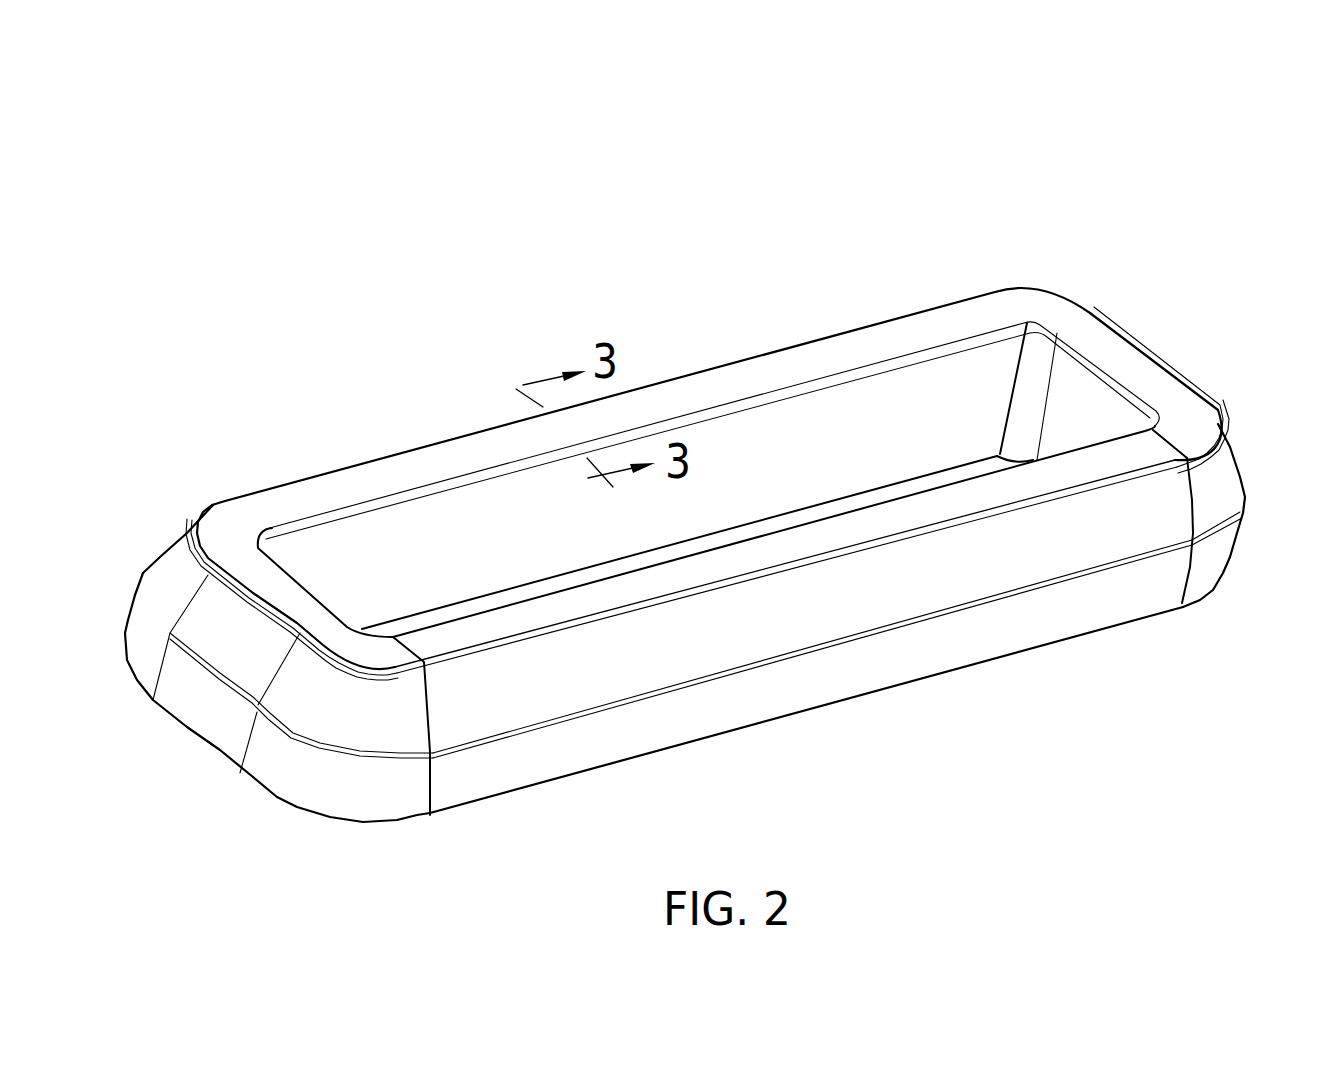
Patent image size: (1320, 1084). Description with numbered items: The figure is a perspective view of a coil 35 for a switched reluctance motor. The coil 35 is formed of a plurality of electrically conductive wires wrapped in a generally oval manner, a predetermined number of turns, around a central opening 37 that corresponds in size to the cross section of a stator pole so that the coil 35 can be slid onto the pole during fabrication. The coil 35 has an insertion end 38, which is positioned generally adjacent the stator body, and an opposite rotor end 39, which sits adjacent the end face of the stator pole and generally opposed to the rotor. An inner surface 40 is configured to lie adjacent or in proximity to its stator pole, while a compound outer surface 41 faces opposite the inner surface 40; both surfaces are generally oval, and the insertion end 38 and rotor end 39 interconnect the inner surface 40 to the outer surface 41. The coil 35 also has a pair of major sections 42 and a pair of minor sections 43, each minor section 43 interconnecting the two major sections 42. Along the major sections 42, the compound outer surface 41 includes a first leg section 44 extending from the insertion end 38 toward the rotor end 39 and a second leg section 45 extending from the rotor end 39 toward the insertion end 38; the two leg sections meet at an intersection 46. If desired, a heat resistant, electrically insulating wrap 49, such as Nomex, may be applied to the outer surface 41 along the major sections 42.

The coil 35 is at (997, 212).
The central opening 37 is at (1044, 362).
The insertion end 38 is at (483, 798).
The rotor end 39 is at (687, 400).
The inner surface 40 is at (900, 402).
The compound outer surface 41 is at (1143, 587).
The major sections 42 is at (437, 442).
The minor sections 43 is at (220, 725).
The first leg section 44 is at (932, 640).
The second leg section 45 is at (1018, 553).
The intersection 46 is at (617, 688).
The insulating wrap 49 is at (797, 623).